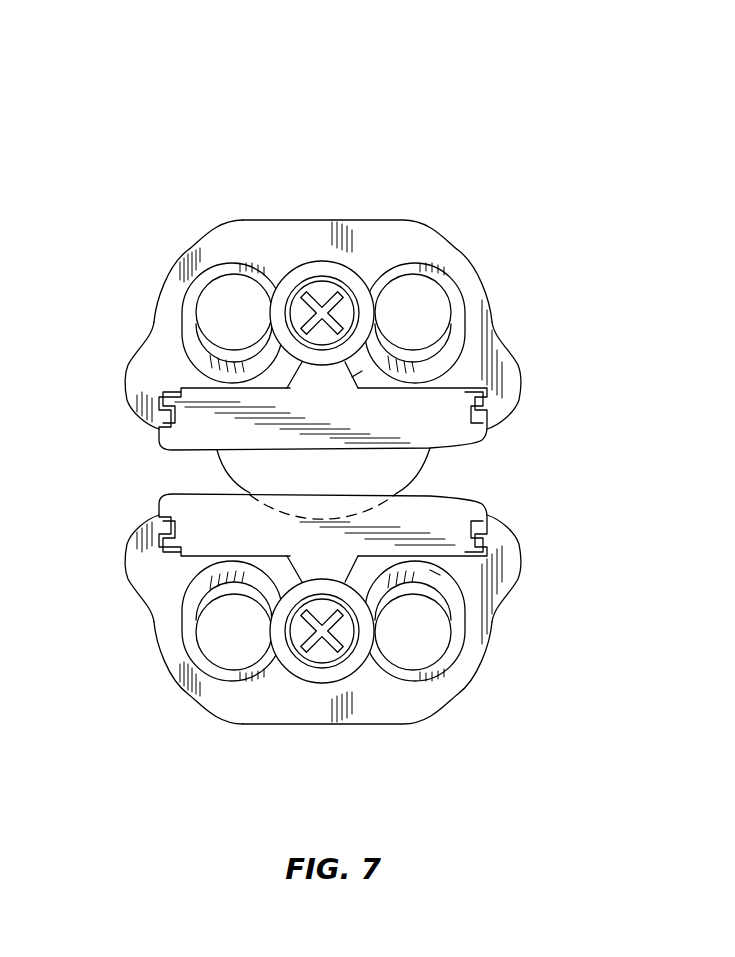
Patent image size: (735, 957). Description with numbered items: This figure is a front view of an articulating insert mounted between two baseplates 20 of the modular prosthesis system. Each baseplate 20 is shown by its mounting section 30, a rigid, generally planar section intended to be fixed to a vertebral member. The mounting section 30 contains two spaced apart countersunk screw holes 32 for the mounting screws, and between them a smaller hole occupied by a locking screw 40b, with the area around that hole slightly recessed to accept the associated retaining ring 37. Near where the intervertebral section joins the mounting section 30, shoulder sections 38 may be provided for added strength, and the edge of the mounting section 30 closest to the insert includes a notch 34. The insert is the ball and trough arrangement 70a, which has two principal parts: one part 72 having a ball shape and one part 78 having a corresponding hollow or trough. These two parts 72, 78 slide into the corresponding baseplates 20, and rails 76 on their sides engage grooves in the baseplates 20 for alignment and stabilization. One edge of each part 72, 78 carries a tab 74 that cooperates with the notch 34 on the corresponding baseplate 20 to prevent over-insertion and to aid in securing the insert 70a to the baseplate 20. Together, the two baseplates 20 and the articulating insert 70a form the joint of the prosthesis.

The baseplate 20 is at (366, 132).
The mounting section 30 is at (443, 245).
The countersunk screw hole 32 is at (228, 298).
The notch 34 is at (352, 377).
The retaining ring 37 is at (327, 292).
The shoulder section 38 is at (133, 362).
The locking screw 40b is at (327, 283).
The ball and trough insert arrangement 70a is at (548, 447).
The ball-shaped part 72 is at (210, 425).
The tab 74 is at (352, 382).
The rail 76 is at (483, 413).
The trough part 78 is at (437, 520).